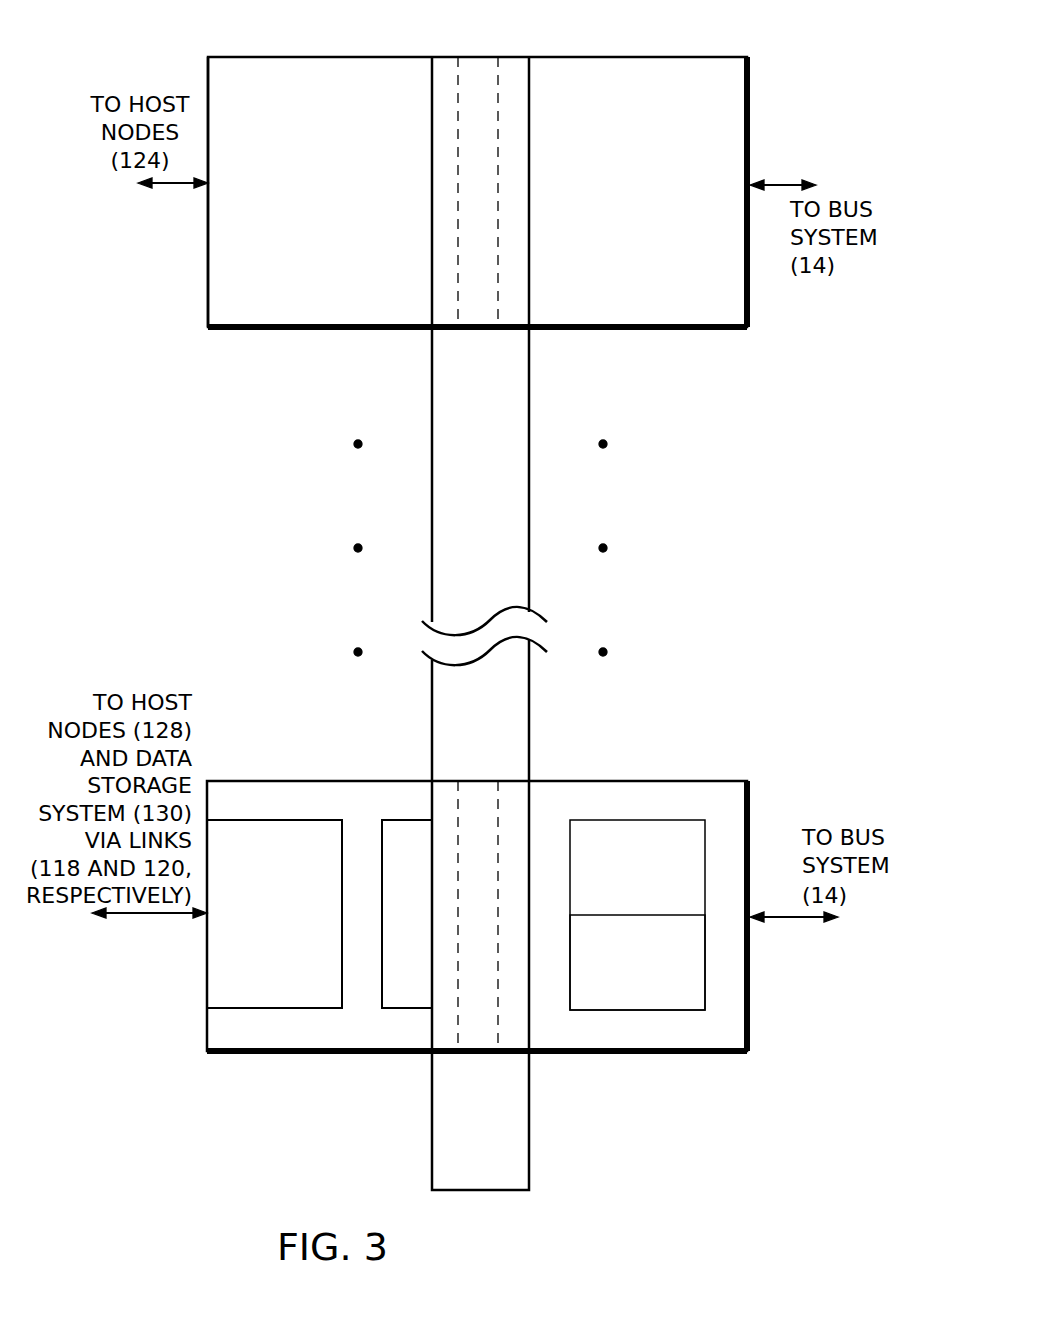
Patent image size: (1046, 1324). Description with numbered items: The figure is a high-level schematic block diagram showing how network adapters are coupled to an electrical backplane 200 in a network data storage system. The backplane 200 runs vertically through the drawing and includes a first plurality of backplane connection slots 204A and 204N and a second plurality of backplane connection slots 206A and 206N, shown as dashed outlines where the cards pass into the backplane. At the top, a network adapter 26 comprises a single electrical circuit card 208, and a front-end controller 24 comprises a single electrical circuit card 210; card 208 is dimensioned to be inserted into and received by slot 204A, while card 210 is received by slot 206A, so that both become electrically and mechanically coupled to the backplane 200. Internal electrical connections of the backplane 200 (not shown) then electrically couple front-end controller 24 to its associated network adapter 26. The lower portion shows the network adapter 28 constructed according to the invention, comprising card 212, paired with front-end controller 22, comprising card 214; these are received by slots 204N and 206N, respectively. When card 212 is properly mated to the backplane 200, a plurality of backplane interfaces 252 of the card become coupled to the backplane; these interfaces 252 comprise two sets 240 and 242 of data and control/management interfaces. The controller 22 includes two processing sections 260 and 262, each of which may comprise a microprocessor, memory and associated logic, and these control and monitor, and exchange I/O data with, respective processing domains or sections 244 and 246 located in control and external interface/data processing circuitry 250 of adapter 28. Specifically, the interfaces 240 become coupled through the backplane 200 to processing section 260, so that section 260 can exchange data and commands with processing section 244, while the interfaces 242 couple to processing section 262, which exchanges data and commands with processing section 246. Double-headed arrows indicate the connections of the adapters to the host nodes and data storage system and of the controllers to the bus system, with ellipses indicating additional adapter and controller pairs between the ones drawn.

The network adapter 26 is at (313, 42).
The network adapter card 208 is at (215, 56).
The front-end controller card 210 is at (697, 334).
The front-end controller 24 is at (764, 118).
The backplane connection slot 204A is at (458, 334).
The backplane connection slot 206A is at (504, 334).
The backplane 200 is at (531, 710).
The network adapter 28 is at (294, 775).
The network adapter card 212 is at (356, 1057).
The front-end controller card 214 is at (750, 1030).
The front-end controller 22 is at (765, 841).
The backplane connection slot 204N is at (466, 757).
The backplane connection slot 206N is at (510, 779).
The processing section 244 is at (258, 818).
The processing section 246 is at (343, 990).
The control and external interface/data processing circuitry 250 is at (268, 1012).
The data and control/management interfaces 240 is at (402, 818).
The data and control/management interfaces 242 is at (381, 990).
The backplane interfaces 252 is at (394, 1012).
The processing section 260 is at (644, 818).
The processing section 262 is at (706, 972).